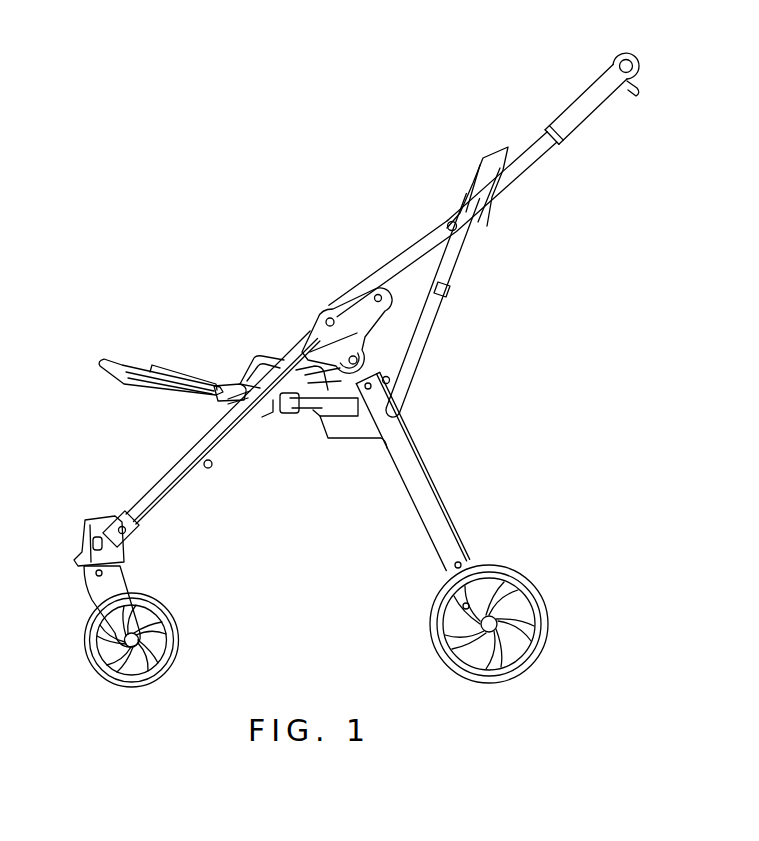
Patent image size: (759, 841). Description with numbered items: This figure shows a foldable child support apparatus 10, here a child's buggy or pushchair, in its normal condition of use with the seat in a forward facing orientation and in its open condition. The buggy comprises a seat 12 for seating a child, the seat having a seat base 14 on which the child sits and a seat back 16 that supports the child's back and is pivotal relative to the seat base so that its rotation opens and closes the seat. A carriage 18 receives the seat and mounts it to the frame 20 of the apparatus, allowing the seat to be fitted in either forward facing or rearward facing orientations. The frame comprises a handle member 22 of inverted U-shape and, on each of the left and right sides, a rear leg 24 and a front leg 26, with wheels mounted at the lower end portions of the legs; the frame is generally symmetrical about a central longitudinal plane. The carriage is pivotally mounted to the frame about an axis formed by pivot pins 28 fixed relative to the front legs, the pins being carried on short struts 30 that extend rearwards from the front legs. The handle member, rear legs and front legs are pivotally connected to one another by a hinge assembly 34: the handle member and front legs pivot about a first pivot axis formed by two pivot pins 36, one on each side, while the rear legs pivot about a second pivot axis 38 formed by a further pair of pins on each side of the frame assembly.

The foldable child support apparatus 10 is at (176, 108).
The seat 12 is at (515, 368).
The seat base 14 is at (174, 361).
The seat back 16 is at (459, 306).
The carriage 18 is at (324, 448).
The frame 20 is at (682, 150).
The handle member 22 is at (484, 178).
The rear leg 24 is at (452, 527).
The front leg 26 is at (197, 509).
The pivot pin 28 is at (297, 453).
The short strut 30 is at (264, 446).
The hinge assembly 34 is at (287, 328).
The pivot pin 36 is at (347, 281).
The second pivot axis 38 is at (414, 383).